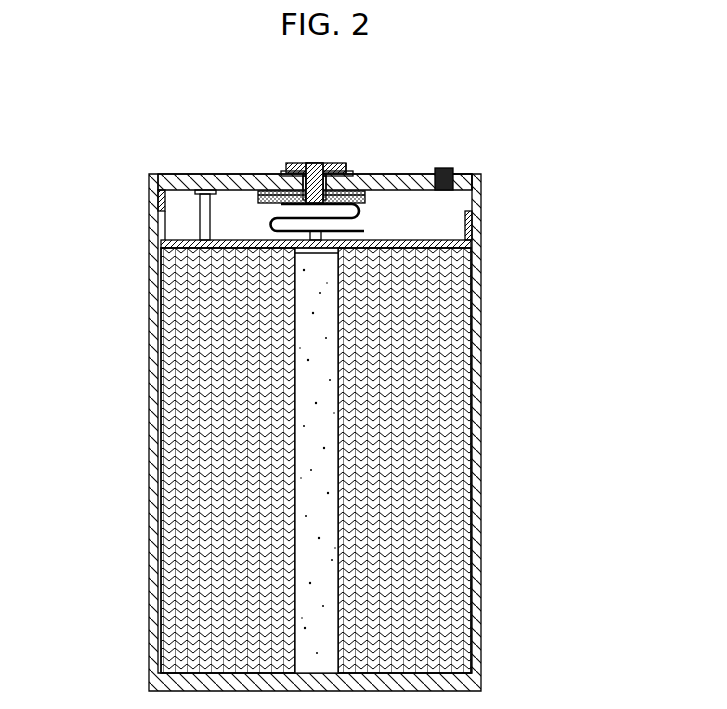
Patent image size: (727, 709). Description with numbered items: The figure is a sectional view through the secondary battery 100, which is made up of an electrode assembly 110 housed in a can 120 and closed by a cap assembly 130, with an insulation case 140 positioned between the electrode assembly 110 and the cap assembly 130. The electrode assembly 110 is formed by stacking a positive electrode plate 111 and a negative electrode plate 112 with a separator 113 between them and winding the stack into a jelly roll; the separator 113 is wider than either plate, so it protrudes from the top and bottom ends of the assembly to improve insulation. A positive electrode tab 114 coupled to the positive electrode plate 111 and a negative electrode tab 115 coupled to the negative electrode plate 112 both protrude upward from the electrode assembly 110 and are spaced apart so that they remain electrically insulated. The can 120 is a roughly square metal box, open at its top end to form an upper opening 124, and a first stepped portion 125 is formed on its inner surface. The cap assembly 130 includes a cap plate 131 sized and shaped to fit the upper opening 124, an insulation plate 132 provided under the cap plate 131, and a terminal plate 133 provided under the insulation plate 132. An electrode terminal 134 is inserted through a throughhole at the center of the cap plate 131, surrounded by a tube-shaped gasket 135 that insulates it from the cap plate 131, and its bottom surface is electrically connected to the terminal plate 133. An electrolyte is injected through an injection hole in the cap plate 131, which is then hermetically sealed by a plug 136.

The secondary battery 100 is at (79, 77).
The electrode assembly 110 is at (375, 460).
The positive electrode plate 111 is at (463, 296).
The negative electrode plate 112 is at (460, 360).
The separator 113 is at (465, 328).
The positive electrode tab 114 is at (198, 212).
The negative electrode tab 115 is at (351, 205).
The can 120 is at (476, 460).
The upper opening 124 is at (161, 193).
The first stepped portion 125 is at (463, 167).
The cap assembly 130 is at (342, 168).
The cap plate 131 is at (185, 166).
The insulation plate 132 is at (270, 164).
The terminal plate 133 is at (252, 191).
The electrode terminal 134 is at (305, 155).
The gasket 135 is at (341, 157).
The plug 136 is at (436, 160).
The insulation case 140 is at (152, 236).